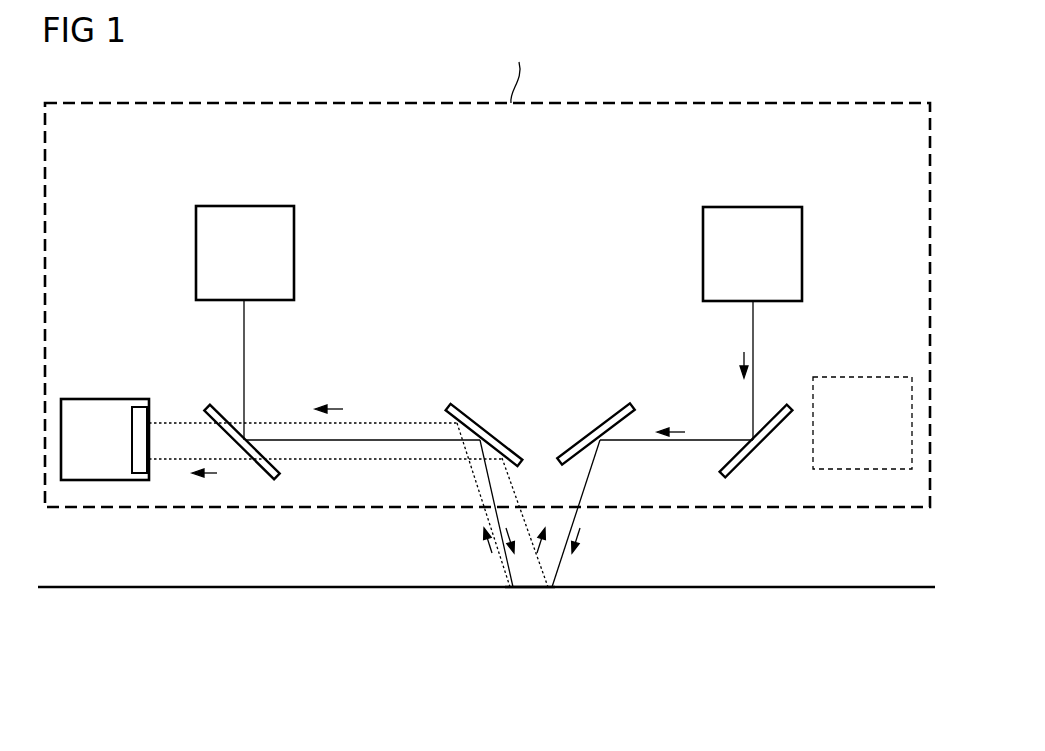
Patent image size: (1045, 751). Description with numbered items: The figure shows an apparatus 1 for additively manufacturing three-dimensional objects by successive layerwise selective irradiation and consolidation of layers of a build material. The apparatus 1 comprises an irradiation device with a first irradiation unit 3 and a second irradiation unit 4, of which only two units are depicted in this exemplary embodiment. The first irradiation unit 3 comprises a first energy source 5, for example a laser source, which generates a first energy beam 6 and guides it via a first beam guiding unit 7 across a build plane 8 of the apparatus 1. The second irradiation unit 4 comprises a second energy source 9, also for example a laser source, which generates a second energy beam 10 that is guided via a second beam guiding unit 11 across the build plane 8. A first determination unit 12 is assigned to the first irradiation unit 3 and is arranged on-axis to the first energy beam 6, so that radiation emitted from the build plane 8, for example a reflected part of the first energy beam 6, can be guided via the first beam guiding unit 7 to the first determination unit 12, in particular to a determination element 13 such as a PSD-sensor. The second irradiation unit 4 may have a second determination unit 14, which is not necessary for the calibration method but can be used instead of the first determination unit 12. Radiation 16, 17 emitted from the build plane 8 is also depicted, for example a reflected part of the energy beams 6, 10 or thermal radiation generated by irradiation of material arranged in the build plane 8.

The apparatus 1 is at (787, 86).
The first irradiation unit 3 is at (352, 340).
The second irradiation unit 4 is at (640, 340).
The first energy source 5 is at (244, 206).
The first energy beam 6 is at (244, 333).
The first beam guiding unit 7 is at (477, 410).
The build plane 8 is at (312, 595).
The second energy source 9 is at (746, 207).
The second energy beam 10 is at (753, 340).
The second beam guiding unit 11 is at (607, 410).
The first determination unit 12 is at (90, 480).
The determination element 13 is at (140, 465).
The second determination unit 14 is at (877, 469).
The radiation 16 is at (510, 583).
The radiation 17 is at (518, 492).